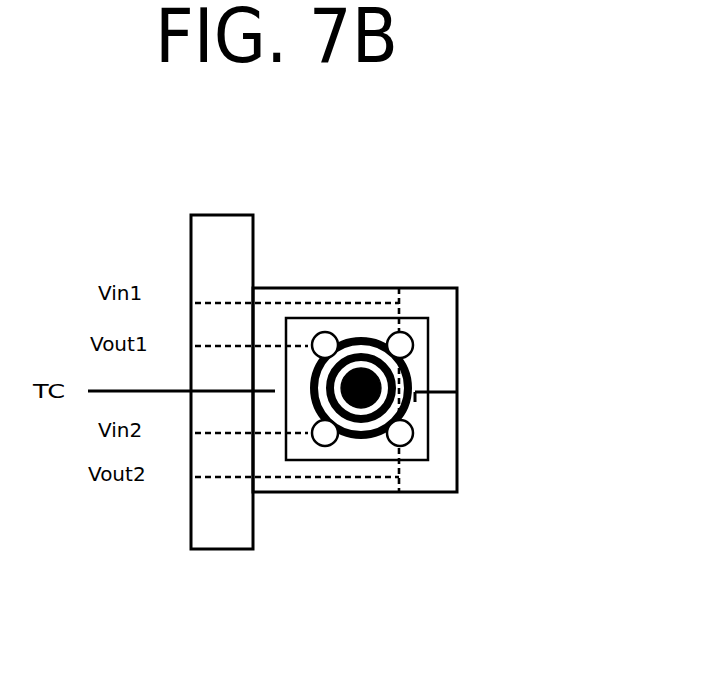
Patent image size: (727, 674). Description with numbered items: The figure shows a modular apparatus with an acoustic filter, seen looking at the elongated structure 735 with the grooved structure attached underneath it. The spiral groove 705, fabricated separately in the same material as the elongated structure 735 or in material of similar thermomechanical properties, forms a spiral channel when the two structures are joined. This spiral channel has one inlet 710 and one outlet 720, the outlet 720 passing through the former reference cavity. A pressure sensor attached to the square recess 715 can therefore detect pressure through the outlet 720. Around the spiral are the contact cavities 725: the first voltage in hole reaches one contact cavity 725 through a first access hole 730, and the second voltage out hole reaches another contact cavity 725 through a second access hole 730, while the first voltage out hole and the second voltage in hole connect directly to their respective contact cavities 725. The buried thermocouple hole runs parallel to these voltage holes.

The spiral groove 705 is at (350, 435).
The channel inlet 710 is at (443, 395).
The square recess 715 is at (432, 435).
The outlet 720 is at (383, 389).
The contact cavity 725 is at (418, 343).
The access hole 730 is at (402, 288).
The elongated structure 735 is at (283, 288).